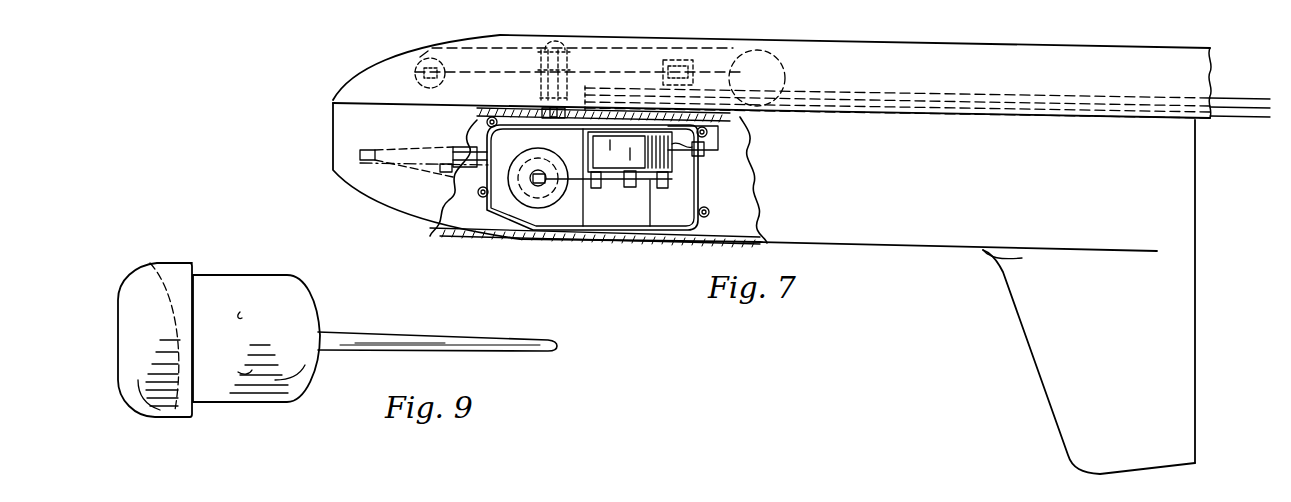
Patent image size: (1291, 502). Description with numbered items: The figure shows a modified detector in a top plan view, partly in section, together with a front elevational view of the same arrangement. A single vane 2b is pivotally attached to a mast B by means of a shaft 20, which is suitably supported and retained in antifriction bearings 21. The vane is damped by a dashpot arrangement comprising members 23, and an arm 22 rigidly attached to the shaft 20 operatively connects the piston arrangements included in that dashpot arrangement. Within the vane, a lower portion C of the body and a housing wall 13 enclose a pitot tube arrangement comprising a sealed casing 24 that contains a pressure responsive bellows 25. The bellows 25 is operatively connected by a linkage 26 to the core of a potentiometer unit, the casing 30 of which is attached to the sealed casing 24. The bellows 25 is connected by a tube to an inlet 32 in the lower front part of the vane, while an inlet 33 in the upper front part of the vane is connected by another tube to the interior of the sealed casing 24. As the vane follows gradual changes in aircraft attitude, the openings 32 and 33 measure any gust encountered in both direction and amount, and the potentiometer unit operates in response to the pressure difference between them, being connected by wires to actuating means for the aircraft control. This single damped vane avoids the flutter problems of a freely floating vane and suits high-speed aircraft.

In FIG. 7, the mast B is at (1106, 52).
In FIG. 9, the mast B is at (121, 366).
In FIG. 7, the lower body section C is at (348, 130).
In FIG. 9, the lower body section C is at (306, 292).
In FIG. 7, the single vane 2b is at (1023, 334).
In FIG. 9, the single vane 2b is at (501, 339).
In FIG. 7, the housing wall 13 is at (575, 247).
In FIG. 7, the shaft 20 is at (568, 64).
In FIG. 7, the antifriction bearings 21 is at (580, 36).
In FIG. 7, the arm 22 is at (620, 72).
In FIG. 7, the dashpot members 23 is at (416, 73).
In FIG. 7, the sealed casing 24 is at (512, 217).
In FIG. 7, the pressure responsive bellows 25 is at (539, 158).
In FIG. 7, the linkage 26 is at (613, 183).
In FIG. 7, the potentiometer casing 30 is at (662, 168).
In FIG. 9, the inlet 32 is at (238, 372).
In FIG. 9, the inlet 33 is at (241, 312).